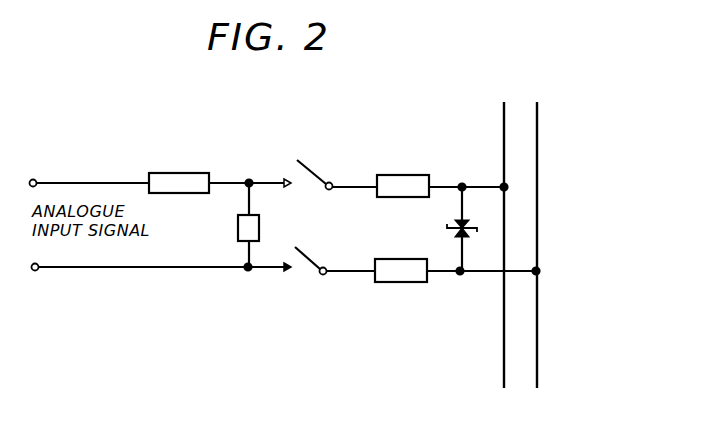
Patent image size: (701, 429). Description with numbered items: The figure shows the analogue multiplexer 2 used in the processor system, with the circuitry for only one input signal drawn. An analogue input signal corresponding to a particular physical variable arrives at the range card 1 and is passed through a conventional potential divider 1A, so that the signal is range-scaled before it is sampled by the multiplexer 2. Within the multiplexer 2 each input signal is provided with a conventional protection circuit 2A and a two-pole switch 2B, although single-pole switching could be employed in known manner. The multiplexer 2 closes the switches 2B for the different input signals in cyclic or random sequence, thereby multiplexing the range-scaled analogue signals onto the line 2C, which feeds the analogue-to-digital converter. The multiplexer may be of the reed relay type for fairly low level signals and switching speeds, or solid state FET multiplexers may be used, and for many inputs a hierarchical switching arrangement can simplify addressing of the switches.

The range card 1 is at (165, 163).
The potential divider 1A is at (238, 229).
The analogue multiplexer 2 is at (398, 283).
The protection circuit 2A is at (442, 229).
The two-pole switch 2B is at (304, 282).
The line 2C is at (506, 143).